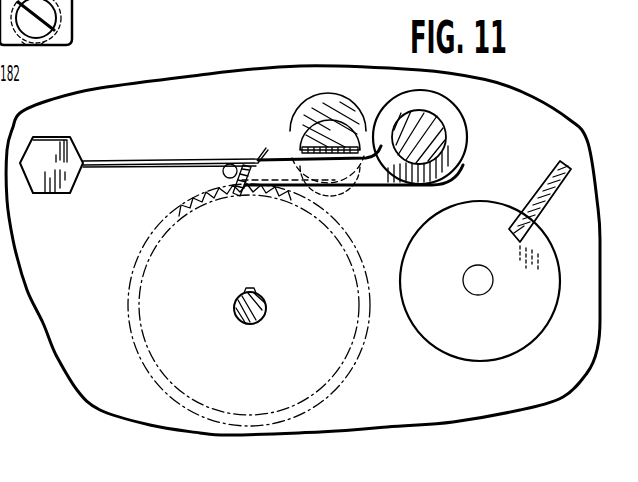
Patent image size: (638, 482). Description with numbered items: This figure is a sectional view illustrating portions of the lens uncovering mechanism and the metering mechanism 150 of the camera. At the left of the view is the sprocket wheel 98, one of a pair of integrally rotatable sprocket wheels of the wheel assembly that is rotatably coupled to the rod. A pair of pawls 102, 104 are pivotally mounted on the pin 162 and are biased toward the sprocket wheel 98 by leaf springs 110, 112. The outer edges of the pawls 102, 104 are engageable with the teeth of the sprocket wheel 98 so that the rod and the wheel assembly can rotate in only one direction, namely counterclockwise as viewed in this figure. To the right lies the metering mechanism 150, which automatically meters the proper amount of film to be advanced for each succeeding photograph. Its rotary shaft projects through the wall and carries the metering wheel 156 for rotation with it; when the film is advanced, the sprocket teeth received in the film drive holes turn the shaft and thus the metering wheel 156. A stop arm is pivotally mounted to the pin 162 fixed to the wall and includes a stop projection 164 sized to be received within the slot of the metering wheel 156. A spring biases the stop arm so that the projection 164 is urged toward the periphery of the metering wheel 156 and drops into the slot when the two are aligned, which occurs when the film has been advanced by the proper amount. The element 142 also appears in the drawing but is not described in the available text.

The sprocket wheel 98 is at (156, 240).
The pawl 102 is at (371, 172).
The pawl 104 is at (233, 161).
The leaf spring 110 is at (152, 165).
The leaf spring 112 is at (134, 160).
The roller 142 is at (313, 125).
The metering mechanism 150 is at (493, 170).
The metering wheel 156 is at (453, 335).
The pin 162 is at (437, 120).
The stop projection 164 is at (525, 232).